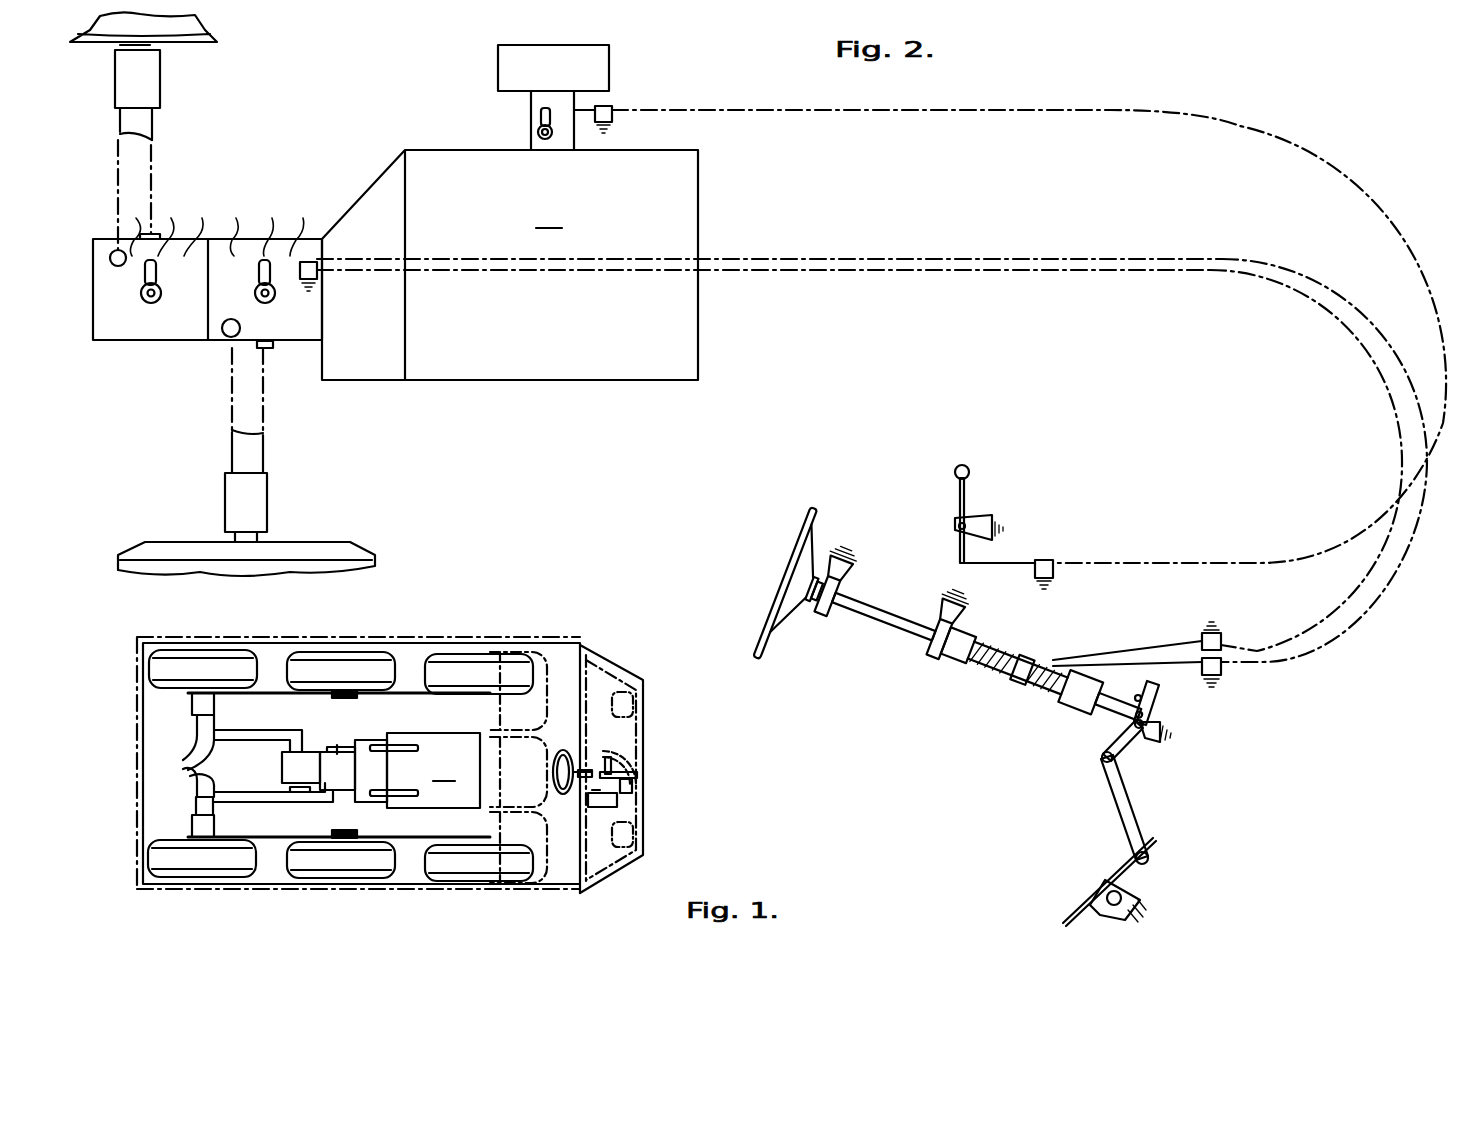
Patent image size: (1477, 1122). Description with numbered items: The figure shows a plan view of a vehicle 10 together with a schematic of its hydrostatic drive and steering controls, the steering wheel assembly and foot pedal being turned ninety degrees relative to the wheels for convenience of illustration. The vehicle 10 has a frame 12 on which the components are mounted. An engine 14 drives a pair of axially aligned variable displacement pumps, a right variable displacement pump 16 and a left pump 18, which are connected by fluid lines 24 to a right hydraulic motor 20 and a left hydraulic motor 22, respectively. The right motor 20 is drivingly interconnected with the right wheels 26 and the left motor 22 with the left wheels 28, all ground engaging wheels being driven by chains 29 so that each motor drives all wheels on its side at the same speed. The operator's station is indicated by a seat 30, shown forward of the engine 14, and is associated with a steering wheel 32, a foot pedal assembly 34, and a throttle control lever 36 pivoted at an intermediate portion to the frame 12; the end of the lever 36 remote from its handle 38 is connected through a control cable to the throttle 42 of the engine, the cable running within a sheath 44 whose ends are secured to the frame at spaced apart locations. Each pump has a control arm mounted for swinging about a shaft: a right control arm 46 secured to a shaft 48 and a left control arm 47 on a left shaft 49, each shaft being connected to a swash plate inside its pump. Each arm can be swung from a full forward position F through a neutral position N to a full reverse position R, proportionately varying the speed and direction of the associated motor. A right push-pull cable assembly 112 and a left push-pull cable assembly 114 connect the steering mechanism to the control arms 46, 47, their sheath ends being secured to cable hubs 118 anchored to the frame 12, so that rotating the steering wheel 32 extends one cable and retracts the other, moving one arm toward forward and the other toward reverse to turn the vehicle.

In FIG. 1, the vehicle 10 is at (518, 622).
In FIG. 2, the frame 12 is at (612, 118).
In FIG. 1, the frame 12 is at (570, 640).
In FIG. 2, the engine 14 is at (872, 406).
In FIG. 1, the engine 14 is at (433, 770).
In FIG. 2, the right variable displacement pump 16 is at (290, 345).
In FIG. 1, the right variable displacement pump 16 is at (325, 760).
In FIG. 2, the left pump 18 is at (125, 345).
In FIG. 1, the left pump 18 is at (282, 758).
In FIG. 2, the right hydraulic motor 20 is at (267, 494).
In FIG. 1, the right hydraulic motor 20 is at (192, 826).
In FIG. 2, the left hydraulic motor 22 is at (160, 80).
In FIG. 1, the left hydraulic motor 22 is at (192, 703).
In FIG. 2, the fluid lines 24 is at (150, 135).
In FIG. 1, the fluid lines 24 is at (183, 762).
In FIG. 2, the right wheels 26 is at (375, 563).
In FIG. 1, the right wheels 26 is at (240, 880).
In FIG. 2, the left wheels 28 is at (200, 42).
In FIG. 1, the left wheels 28 is at (440, 650).
In FIG. 1, the chains 29 is at (305, 698).
In FIG. 1, the seat 30 is at (557, 797).
In FIG. 2, the steering wheel 32 is at (785, 568).
In FIG. 1, the steering wheel 32 is at (565, 748).
In FIG. 2, the foot pedal assembly 34 is at (1090, 866).
In FIG. 1, the foot pedal assembly 34 is at (637, 795).
In FIG. 2, the throttle control lever 36 is at (966, 492).
In FIG. 2, the handle 38 is at (969, 470).
In FIG. 2, the throttle 42 is at (540, 118).
In FIG. 2, the sheath 44 is at (612, 108).
In FIG. 2, the right control arm 46 is at (258, 275).
In FIG. 1, the right control arm 46 is at (342, 746).
In FIG. 2, the left control arm 47 is at (145, 275).
In FIG. 1, the left control arm 47 is at (292, 789).
In FIG. 2, the shaft 48 is at (265, 303).
In FIG. 2, the left shaft 49 is at (150, 303).
In FIG. 1, the right push-pull cable assembly 112 is at (408, 740).
In FIG. 1, the left push-pull cable assembly 114 is at (408, 806).
In FIG. 2, the cable hubs 118 is at (312, 262).